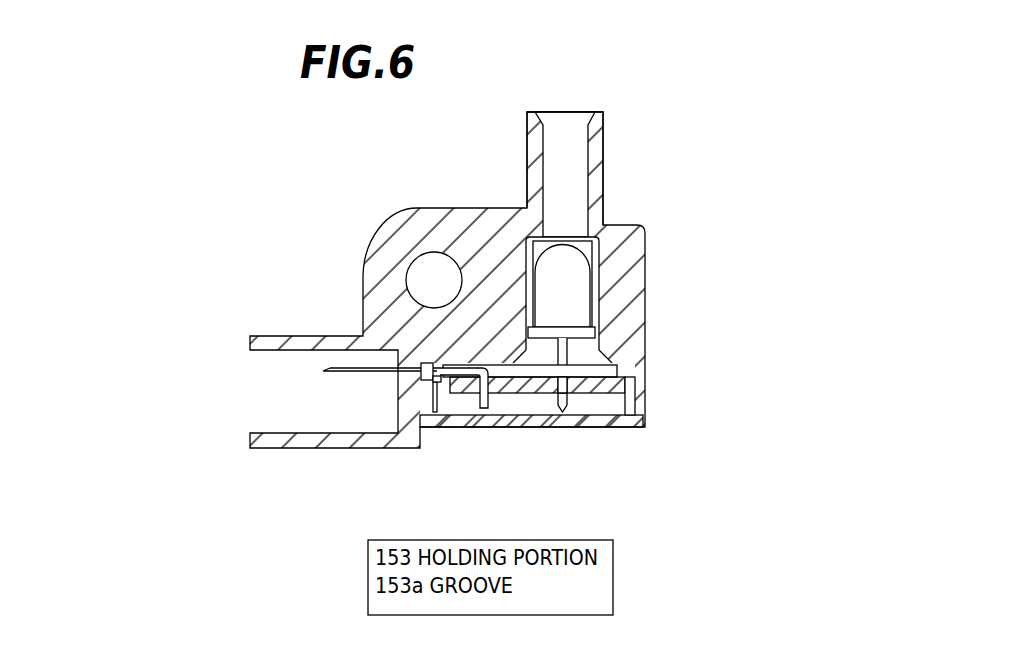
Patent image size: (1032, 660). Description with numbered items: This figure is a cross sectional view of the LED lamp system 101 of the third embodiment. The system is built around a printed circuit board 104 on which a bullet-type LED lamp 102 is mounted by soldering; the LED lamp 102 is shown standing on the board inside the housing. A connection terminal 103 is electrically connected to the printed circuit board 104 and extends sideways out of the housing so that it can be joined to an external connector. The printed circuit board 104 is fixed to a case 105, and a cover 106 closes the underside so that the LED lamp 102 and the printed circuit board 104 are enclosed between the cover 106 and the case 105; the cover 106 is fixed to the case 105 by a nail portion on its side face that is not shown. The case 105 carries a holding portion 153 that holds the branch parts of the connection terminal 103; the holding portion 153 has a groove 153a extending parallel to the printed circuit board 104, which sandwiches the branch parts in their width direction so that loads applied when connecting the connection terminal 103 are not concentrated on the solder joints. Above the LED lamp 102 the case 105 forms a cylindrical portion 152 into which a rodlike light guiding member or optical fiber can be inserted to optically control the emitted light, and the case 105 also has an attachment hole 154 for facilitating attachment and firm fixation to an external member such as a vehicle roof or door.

The LED lamp system 101 is at (632, 79).
The LED lamp 102 is at (570, 275).
The connection terminal 103 is at (327, 371).
The printed circuit board 104 is at (612, 384).
The case 105 is at (407, 238).
The cover 106 is at (578, 428).
The cylindrical portion 152 is at (527, 150).
The holding portion 153 is at (438, 393).
The groove 153a is at (421, 380).
The attachment hole 154 is at (410, 283).